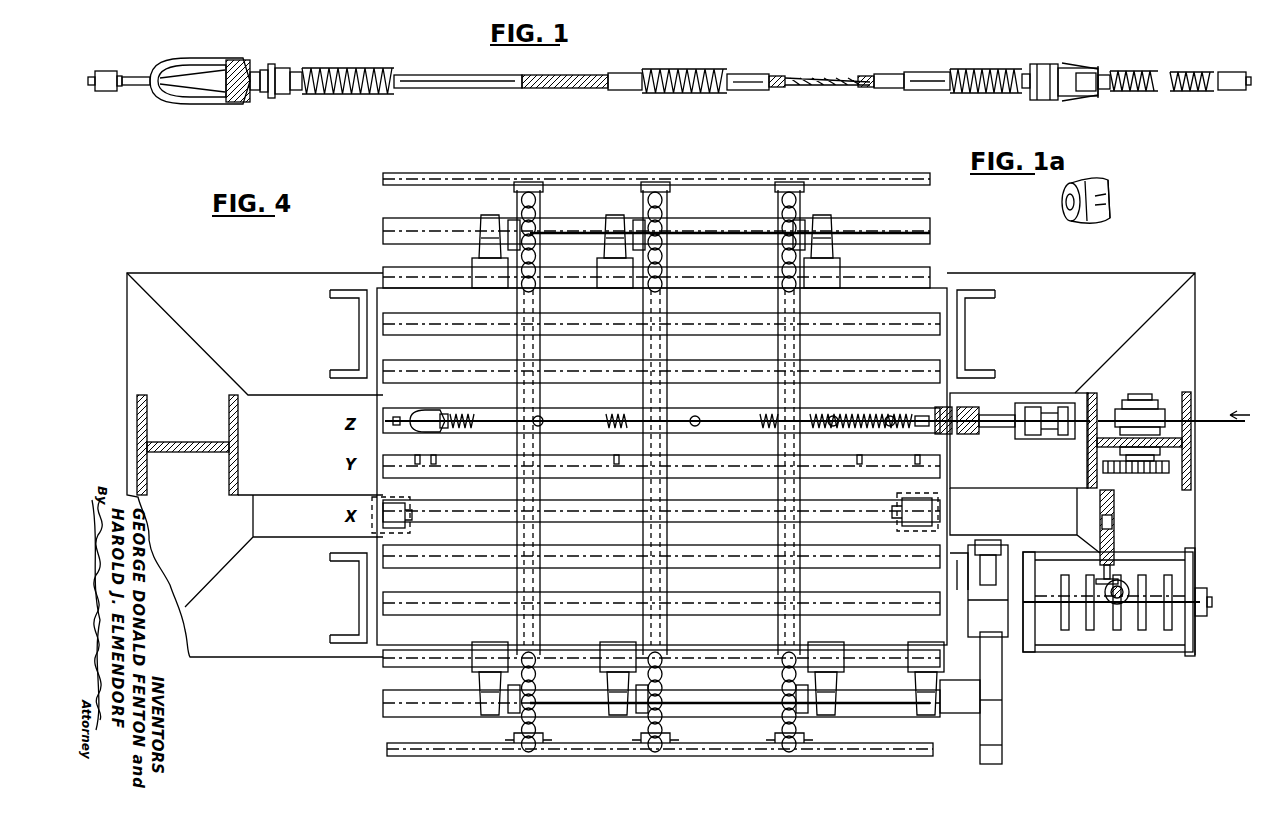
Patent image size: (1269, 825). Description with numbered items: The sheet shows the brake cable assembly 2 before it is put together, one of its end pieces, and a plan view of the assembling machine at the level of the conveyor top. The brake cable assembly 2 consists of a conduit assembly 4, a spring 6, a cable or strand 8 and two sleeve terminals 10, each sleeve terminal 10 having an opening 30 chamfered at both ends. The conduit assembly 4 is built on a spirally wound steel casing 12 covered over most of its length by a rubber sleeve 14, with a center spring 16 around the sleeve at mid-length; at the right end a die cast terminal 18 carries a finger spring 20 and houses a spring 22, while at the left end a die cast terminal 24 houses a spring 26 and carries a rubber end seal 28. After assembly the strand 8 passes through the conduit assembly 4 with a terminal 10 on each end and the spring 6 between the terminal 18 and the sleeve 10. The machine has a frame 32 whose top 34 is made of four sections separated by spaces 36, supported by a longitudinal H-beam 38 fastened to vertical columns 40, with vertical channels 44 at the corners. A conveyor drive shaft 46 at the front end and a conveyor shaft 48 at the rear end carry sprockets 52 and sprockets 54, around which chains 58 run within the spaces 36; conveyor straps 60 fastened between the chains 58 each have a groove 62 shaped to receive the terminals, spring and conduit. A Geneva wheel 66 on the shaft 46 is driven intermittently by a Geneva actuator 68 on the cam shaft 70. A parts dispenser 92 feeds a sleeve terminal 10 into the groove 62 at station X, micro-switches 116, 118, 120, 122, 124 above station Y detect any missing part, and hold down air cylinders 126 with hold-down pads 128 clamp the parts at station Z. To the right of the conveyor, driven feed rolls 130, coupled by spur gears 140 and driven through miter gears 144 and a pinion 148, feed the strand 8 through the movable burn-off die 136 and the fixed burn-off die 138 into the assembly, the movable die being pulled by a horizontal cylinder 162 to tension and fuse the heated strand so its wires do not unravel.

In FIG. 1, the brake cable assembly 2 is at (1184, 92).
In FIG. 4, the brake cable assembly 2 is at (755, 425).
In FIG. 1, the conduit assembly 4 is at (755, 90).
In FIG. 1, the spring 6 is at (1150, 90).
In FIG. 1, the cable or strand 8 is at (833, 88).
In FIG. 4, the cable or strand 8 is at (1215, 424).
In FIG. 1, the sleeve terminal 10 is at (103, 92).
In FIG. 1a, the sleeve terminal 10 is at (1112, 200).
In FIG. 1, the spirally wound steel casing 12 is at (590, 88).
In FIG. 1, the rubber sleeve 14 is at (472, 88).
In FIG. 1, the center spring 16 is at (690, 94).
In FIG. 1, the die cast terminal 18 is at (1040, 100).
In FIG. 1, the finger spring 20 is at (1085, 97).
In FIG. 1, the spring 22 is at (968, 93).
In FIG. 1, the die cast terminal 24 is at (294, 93).
In FIG. 1, the spring 26 is at (366, 95).
In FIG. 1, the rubber end seal 28 is at (188, 104).
In FIG. 1a, the opening 30 is at (1063, 208).
In FIG. 4, the frame 32 is at (998, 301).
In FIG. 4, the top 34 is at (951, 488).
In FIG. 4, the space 36 is at (540, 585).
In FIG. 4, the longitudinal H-beam 38 is at (1048, 488).
In FIG. 4, the vertical column 40 is at (137, 432).
In FIG. 4, the vertical channel 44 is at (366, 325).
In FIG. 4, the conveyor drive shaft 46 is at (740, 717).
In FIG. 4, the conveyor shaft 48 is at (693, 233).
In FIG. 4, the sprocket 52 is at (540, 722).
In FIG. 4, the sprocket 54 is at (541, 212).
In FIG. 4, the chain 58 is at (535, 545).
In FIG. 4, the conveyor strap 60 is at (500, 173).
In FIG. 4, the groove 62 is at (577, 433).
In FIG. 4, the Geneva wheel 66 is at (1002, 735).
In FIG. 4, the Geneva actuator 68 is at (990, 545).
In FIG. 4, the cam shaft 70 is at (1212, 602).
In FIG. 4, the parts dispenser 92 is at (405, 528).
In FIG. 4, the micro-switch 116 is at (918, 455).
In FIG. 4, the micro-switch 118 is at (860, 455).
In FIG. 4, the micro-switch 120 is at (625, 446).
In FIG. 4, the micro-switch 122 is at (434, 455).
In FIG. 4, the micro-switch 124 is at (418, 455).
In FIG. 4, the hold down air cylinder 126 is at (393, 418).
In FIG. 4, the hold-down pad 128 is at (437, 410).
In FIG. 4, the driven feed roll 130 is at (1142, 394).
In FIG. 4, the movable burn-off die 136 is at (971, 434).
In FIG. 4, the fixed burn-off die 138 is at (950, 407).
In FIG. 4, the spur gear 140 is at (1160, 470).
In FIG. 4, the miter gear 144 is at (1123, 582).
In FIG. 4, the pinion 148 is at (1103, 466).
In FIG. 4, the horizontal cylinder 162 is at (1050, 439).